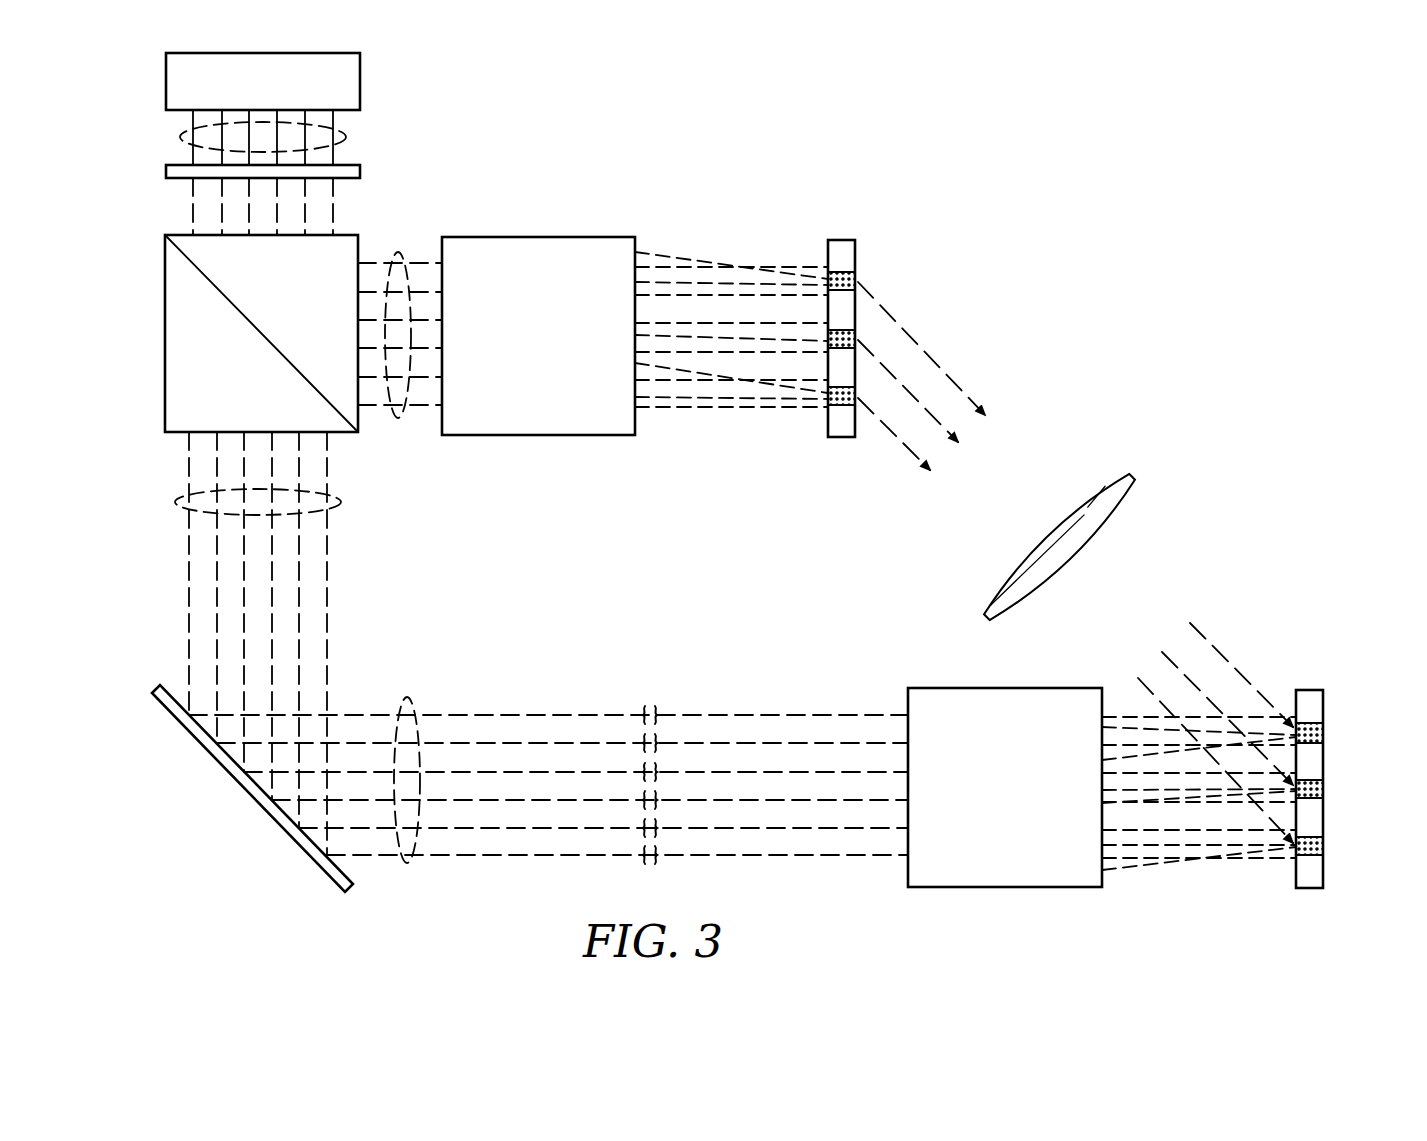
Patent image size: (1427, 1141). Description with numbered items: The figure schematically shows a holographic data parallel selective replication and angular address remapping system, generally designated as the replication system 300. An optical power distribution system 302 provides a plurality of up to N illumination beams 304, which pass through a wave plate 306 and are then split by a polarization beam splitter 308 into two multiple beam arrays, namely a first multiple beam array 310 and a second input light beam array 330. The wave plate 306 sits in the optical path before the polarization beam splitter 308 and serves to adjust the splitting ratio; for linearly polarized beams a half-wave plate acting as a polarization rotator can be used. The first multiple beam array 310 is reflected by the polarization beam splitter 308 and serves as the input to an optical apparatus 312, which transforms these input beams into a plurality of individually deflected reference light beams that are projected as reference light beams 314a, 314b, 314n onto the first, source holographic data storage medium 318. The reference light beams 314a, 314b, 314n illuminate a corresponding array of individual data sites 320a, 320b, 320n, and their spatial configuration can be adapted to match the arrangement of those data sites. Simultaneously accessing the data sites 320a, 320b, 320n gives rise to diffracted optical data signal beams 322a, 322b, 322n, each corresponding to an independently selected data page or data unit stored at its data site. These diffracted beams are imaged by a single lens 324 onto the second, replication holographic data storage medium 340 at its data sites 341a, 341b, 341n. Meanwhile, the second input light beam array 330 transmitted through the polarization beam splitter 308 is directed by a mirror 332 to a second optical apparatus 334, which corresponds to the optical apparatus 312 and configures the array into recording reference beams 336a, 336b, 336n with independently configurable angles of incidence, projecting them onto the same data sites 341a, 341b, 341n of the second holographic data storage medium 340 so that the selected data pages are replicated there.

The replication system 300 is at (1102, 240).
The optical power distribution system 302 is at (166, 76).
The illumination beams 304 is at (345, 136).
The wave plate 306 is at (166, 170).
The polarization beam splitter 308 is at (165, 336).
The first multiple beam array 310 is at (400, 252).
The optical apparatus 312 is at (535, 237).
The reference light beam 314a is at (668, 252).
The reference light beam 314b is at (642, 342).
The reference light beam 314n is at (640, 390).
The first holographic data storage medium 318 is at (846, 240).
The data site 320a is at (858, 282).
The data site 320b is at (858, 341).
The data site 320n is at (828, 398).
The diffracted optical data signal beam 322a is at (968, 398).
The diffracted optical data signal beam 322b is at (962, 434).
The diffracted optical data signal beam 322n is at (903, 445).
The lens 324 is at (1132, 477).
The second input light beam array 330 is at (178, 502).
The mirror 332 is at (245, 793).
The optical apparatus 334 is at (1005, 888).
The recording reference beam 336a is at (1102, 735).
The recording reference beam 336b is at (1102, 788).
The recording reference beam 336n is at (1138, 868).
The second holographic data storage medium 340 is at (1310, 888).
The data site 341a is at (1323, 735).
The data site 341b is at (1323, 790).
The data site 341n is at (1323, 847).